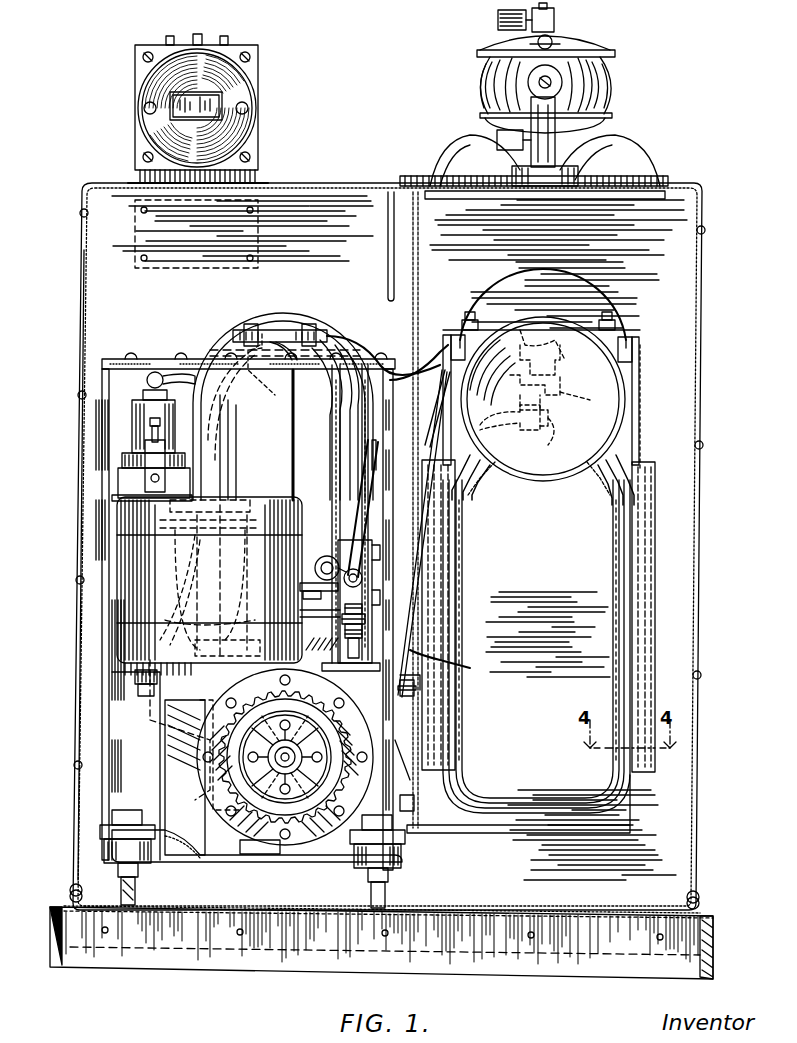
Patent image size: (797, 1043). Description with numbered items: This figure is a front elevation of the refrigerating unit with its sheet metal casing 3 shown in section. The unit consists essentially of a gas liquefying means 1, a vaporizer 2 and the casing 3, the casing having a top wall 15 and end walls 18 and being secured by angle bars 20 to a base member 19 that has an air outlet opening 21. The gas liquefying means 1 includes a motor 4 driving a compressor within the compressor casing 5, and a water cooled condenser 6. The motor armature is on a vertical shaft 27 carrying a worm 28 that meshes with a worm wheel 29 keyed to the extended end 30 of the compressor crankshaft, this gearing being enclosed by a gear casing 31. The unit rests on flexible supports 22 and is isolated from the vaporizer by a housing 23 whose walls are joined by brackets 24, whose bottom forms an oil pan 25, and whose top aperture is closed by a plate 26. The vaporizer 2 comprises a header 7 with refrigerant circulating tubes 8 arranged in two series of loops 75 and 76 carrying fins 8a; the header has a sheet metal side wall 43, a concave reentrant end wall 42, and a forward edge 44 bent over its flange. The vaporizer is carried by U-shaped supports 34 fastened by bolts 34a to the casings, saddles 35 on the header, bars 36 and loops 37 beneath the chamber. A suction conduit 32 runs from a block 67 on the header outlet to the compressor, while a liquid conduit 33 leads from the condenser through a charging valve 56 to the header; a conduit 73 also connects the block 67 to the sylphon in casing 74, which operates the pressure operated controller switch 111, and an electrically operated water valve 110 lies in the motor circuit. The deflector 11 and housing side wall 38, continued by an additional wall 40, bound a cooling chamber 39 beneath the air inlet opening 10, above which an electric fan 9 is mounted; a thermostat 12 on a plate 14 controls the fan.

The gas liquefying means 1 is at (130, 602).
The vaporizer 2 is at (527, 419).
The sheet metal enclosing casing 3 is at (84, 248).
The motor 4 is at (232, 616).
The compressor casing 5 is at (340, 555).
The water cooled condenser 6 is at (283, 406).
The expansion chamber or header 7 is at (590, 328).
The refrigerant circulating tubes 8 is at (530, 800).
The heat absorbing plates or fins 8a is at (446, 562).
The electric fan 9 is at (613, 80).
The air inlet opening 10 is at (590, 200).
The deflector 11 is at (419, 270).
The thermostat 12 is at (248, 112).
The plate 14 is at (250, 184).
The top wall 15 is at (345, 186).
The end wall 18 is at (83, 345).
The base member 19 is at (312, 962).
The angle bars 20 is at (70, 888).
The air outlet opening 21 is at (528, 914).
The flexible supports 22 is at (100, 850).
The housing 23 is at (160, 364).
The brackets 24 is at (122, 368).
The oil receptacle or pan 25 is at (252, 860).
The plate 26 is at (240, 332).
The vertical shaft 27 is at (180, 806).
The worm 28 is at (190, 770).
The worm wheel 29 is at (285, 757).
The extended end of the crankshaft 30 is at (285, 757).
The gear casing 31 is at (172, 742).
The suction conduit 32 is at (432, 420).
The liquid refrigerant conduit 33 is at (167, 720).
The U-shaped supports 34 is at (642, 436).
The bolts 34a is at (412, 690).
The saddles 35 is at (552, 322).
The bars 36 is at (468, 322).
The loops 37 is at (541, 482).
The side wall of the housing 38 is at (392, 470).
The cooling chamber 39 is at (668, 282).
The additional wall 40 is at (380, 905).
The concave reentrant end wall member 42 is at (600, 399).
The body portion or side wall 43 is at (622, 416).
The forward edge 44 is at (624, 378).
The charging valve 56 is at (140, 700).
The plate or block 67 is at (577, 404).
The conduit 73 is at (556, 357).
The casing 74 is at (108, 411).
The expansion coils 75 is at (492, 490).
The expansion coils 76 is at (483, 515).
The electrically operated water valve 110 is at (322, 520).
The pressure operated controller switch 111 is at (133, 487).